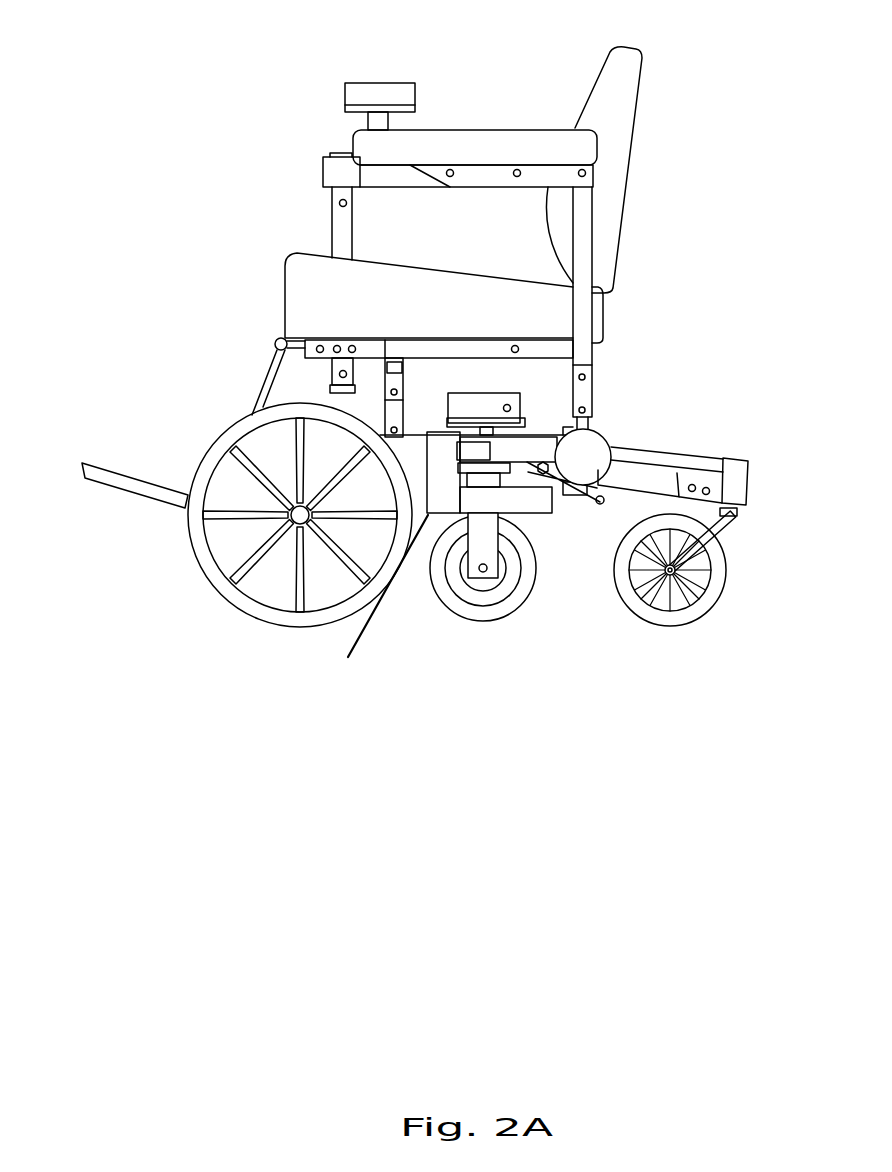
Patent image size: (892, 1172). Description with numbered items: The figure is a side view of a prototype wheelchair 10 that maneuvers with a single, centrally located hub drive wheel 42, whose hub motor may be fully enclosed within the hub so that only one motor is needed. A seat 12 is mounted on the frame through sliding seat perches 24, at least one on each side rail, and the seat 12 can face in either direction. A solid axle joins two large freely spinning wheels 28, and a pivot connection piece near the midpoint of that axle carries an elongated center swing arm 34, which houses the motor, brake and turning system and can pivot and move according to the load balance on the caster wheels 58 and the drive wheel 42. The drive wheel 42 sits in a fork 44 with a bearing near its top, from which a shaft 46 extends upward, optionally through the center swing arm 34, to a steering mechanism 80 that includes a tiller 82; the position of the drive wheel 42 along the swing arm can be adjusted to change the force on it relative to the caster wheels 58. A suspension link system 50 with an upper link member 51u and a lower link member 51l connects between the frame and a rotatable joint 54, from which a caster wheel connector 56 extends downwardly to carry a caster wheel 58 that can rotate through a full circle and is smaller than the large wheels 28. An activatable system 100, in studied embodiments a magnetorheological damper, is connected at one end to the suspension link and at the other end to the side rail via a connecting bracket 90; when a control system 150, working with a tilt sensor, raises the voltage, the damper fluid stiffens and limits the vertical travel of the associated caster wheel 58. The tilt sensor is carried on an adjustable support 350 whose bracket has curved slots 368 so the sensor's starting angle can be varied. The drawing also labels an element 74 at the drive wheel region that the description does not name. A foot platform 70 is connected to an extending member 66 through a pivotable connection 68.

The wheelchair 10 is at (670, 205).
The seat 12 is at (413, 297).
The sliding seat perch 24 is at (397, 420).
The large wheel 28 is at (250, 414).
The center swing arm 34 is at (544, 415).
The drive wheel 42 is at (460, 607).
The fork 44 is at (487, 578).
The shaft 46 is at (447, 358).
The suspension link system 50 is at (680, 475).
The lower link member 51l is at (625, 447).
The upper link member 51u is at (652, 480).
The rotatable joint 54 is at (740, 467).
The caster wheel connector 56 is at (723, 528).
The caster wheel 58 is at (717, 585).
The extending member 66 is at (257, 383).
The pivotable connection 68 is at (278, 340).
The foot platform 70 is at (107, 470).
The caster wheel assembly 74 is at (492, 612).
The steering mechanism 80 is at (366, 78).
The tiller 82 is at (400, 97).
The connecting bracket 90 is at (379, 604).
The activatable system 100 is at (517, 507).
The control system 150 is at (477, 450).
The support 350 is at (538, 470).
The slot 368 is at (547, 473).